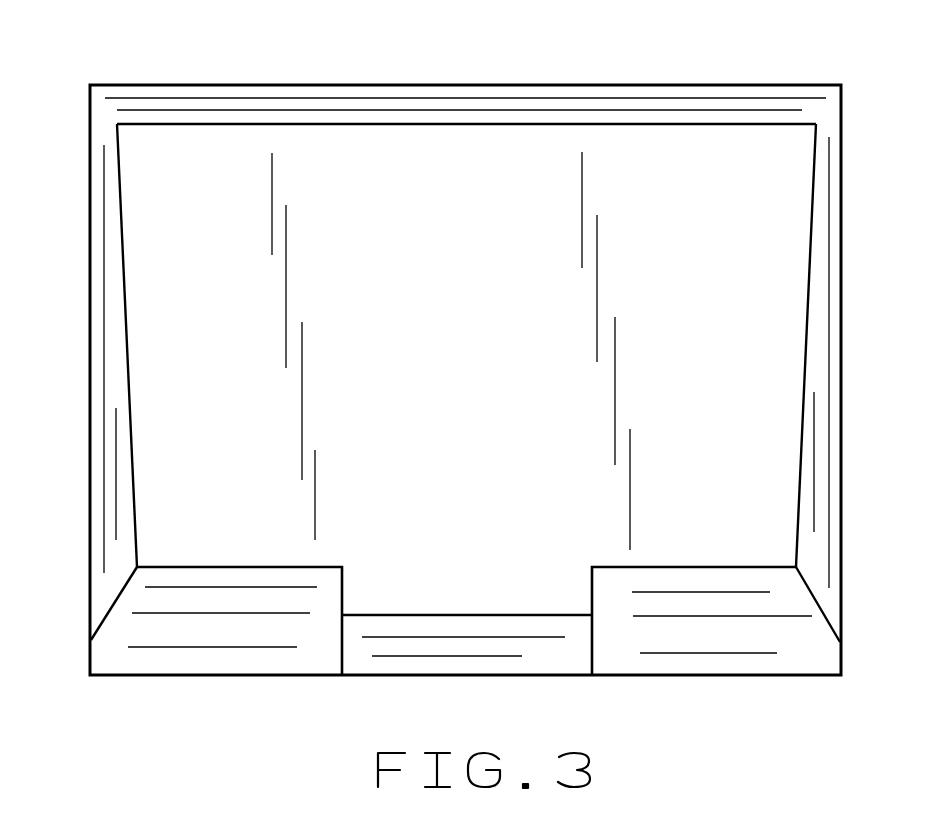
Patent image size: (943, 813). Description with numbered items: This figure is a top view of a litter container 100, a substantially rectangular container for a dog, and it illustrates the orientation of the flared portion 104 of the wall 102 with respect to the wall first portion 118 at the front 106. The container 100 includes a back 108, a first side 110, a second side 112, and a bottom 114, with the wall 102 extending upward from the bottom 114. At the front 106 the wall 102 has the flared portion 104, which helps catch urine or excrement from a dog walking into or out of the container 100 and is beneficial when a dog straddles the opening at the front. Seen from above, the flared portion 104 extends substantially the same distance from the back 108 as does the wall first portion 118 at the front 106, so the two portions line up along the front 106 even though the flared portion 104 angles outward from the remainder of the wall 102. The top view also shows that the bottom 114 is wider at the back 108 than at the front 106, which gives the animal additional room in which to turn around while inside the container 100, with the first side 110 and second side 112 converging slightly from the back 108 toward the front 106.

The litter container 100 is at (82, 74).
The wall 102 is at (281, 613).
The flared portion 104 is at (528, 650).
The front 106 is at (644, 640).
The back 108 is at (578, 117).
The first side 110 is at (110, 533).
The second side 112 is at (819, 408).
The bottom 114 is at (158, 302).
The wall first portion 118 is at (338, 85).